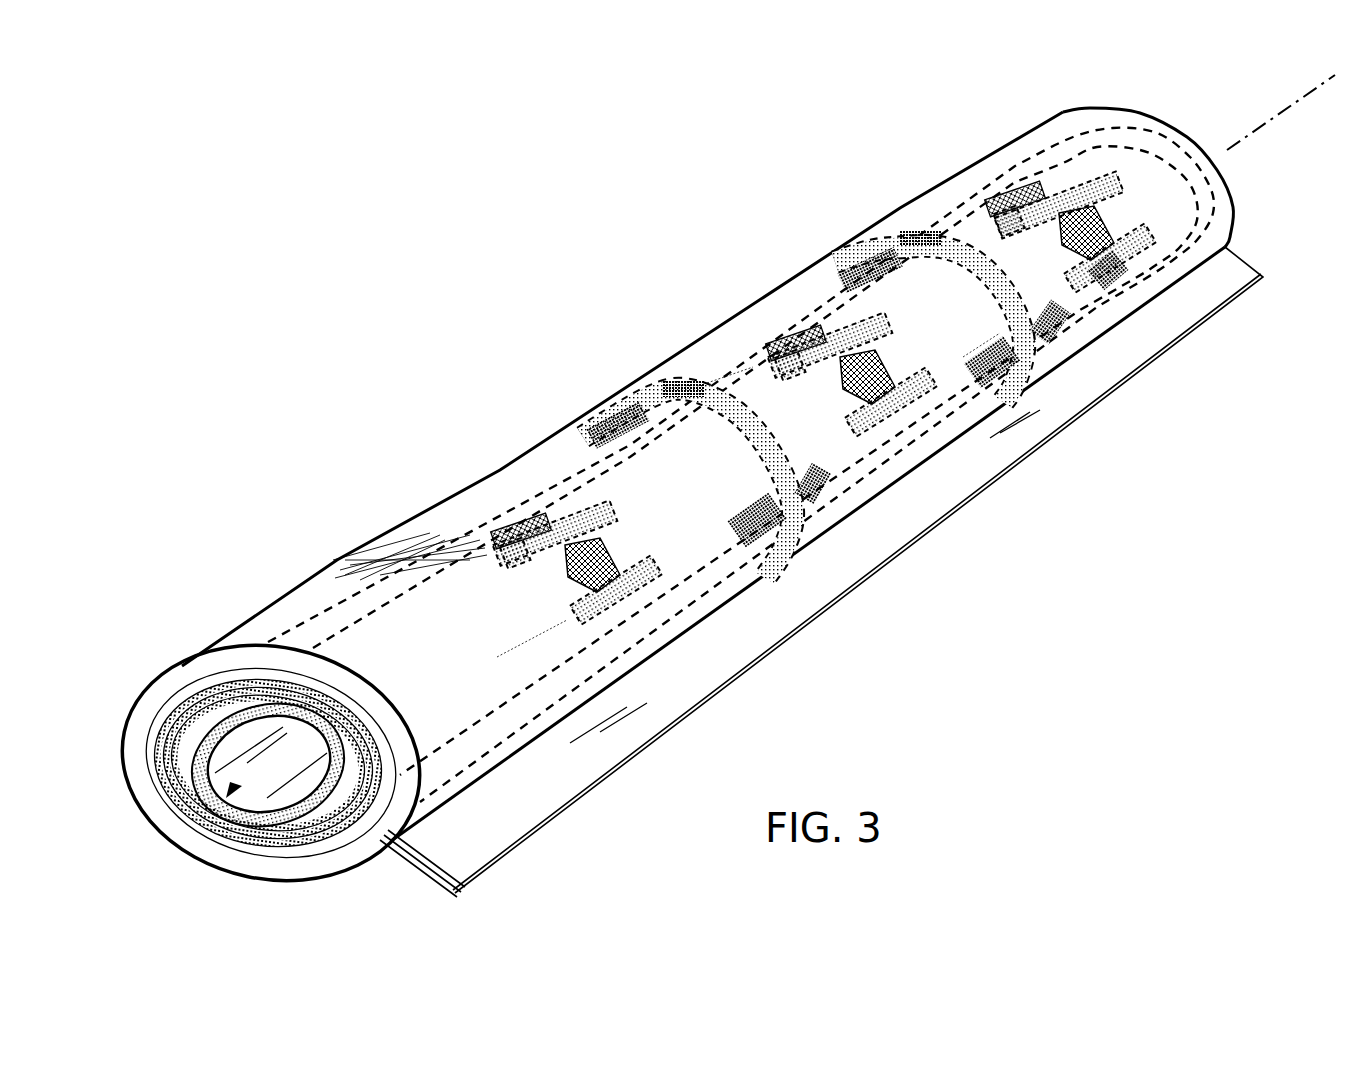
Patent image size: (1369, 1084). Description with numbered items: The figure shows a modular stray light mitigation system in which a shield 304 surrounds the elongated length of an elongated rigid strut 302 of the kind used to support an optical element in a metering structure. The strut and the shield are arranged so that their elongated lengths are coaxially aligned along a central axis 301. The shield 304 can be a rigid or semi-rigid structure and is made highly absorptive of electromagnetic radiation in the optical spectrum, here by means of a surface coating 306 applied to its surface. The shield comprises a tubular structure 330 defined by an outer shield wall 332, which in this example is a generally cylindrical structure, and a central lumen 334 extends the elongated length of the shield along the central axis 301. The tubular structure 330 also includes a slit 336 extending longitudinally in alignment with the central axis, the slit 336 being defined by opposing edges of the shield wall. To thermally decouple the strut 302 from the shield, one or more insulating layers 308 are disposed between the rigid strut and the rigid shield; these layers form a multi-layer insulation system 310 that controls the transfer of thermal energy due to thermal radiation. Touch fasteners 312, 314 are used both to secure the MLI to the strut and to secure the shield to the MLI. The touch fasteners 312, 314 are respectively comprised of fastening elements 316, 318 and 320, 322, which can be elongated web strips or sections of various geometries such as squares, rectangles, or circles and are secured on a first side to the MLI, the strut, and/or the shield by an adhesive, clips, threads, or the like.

The central axis 301 is at (1268, 124).
The elongated rigid strut 302 is at (195, 778).
The shield 304 is at (150, 710).
The surface coating 306 is at (365, 540).
The insulating layers 308 is at (262, 848).
The multi-layer insulation (MLI) system 310 is at (730, 578).
The touch fastener 312 is at (797, 364).
The touch fastener 314 is at (910, 225).
The fastening element 316 is at (585, 575).
The fastening element 318 is at (512, 548).
The fastening element 320 is at (745, 440).
The fastening element 322 is at (865, 265).
The tubular structure 330 is at (236, 610).
The outer shield wall 332 is at (500, 467).
The central lumen 334 is at (230, 795).
The slit 336 is at (380, 846).